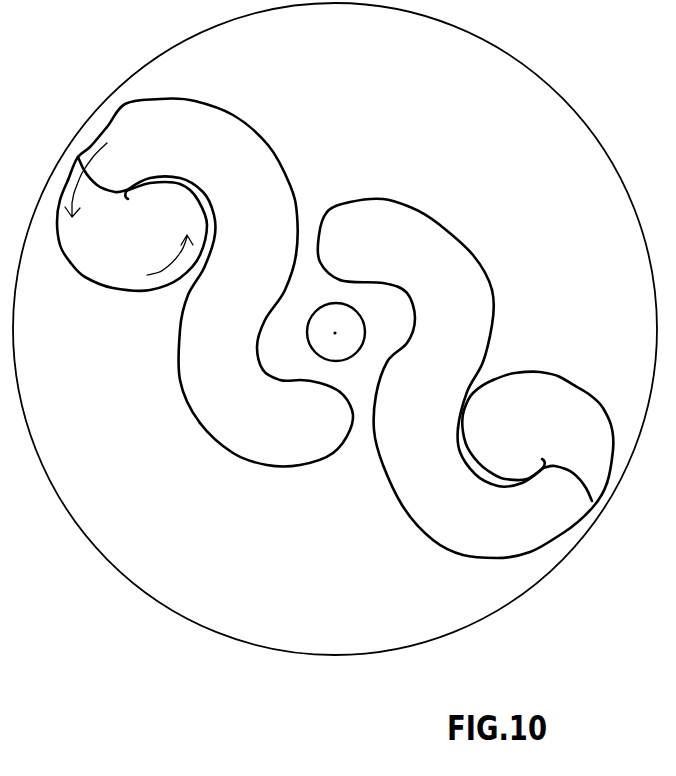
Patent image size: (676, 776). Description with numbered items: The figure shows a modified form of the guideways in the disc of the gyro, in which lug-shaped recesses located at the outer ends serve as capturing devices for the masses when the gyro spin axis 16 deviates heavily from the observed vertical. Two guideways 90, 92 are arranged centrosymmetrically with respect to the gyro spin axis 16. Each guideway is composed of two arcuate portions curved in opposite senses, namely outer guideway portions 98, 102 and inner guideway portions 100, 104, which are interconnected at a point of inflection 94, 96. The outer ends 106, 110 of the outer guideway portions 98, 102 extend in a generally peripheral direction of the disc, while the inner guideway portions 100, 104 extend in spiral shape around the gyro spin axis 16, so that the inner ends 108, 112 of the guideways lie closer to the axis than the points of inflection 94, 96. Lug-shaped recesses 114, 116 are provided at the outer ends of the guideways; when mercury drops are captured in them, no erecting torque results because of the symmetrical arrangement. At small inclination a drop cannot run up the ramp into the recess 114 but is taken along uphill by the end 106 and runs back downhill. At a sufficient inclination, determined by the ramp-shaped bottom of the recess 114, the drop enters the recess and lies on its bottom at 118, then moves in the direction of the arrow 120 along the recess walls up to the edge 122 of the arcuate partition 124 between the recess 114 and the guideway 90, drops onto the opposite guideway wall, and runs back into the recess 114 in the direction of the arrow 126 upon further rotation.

The gyro spin axis 16 is at (336, 333).
The guideway 90 is at (203, 282).
The guideway 92 is at (450, 378).
The point of inflection 94 is at (227, 350).
The point of inflection 96 is at (438, 308).
The outer guideway portion 98 is at (188, 176).
The inner guideway portion 100 is at (289, 416).
The outer guideway portion 102 is at (490, 476).
The inner guideway portion 104 is at (389, 251).
The outer end 106 is at (117, 221).
The inner end 108 is at (352, 410).
The outer end 110 is at (537, 418).
The inner end 112 is at (322, 268).
The lug-shaped recess 114 is at (77, 273).
The lug-shaped recess 116 is at (527, 373).
The bottom of recess 118 is at (127, 291).
The arrow 120 is at (168, 268).
The edge 122 is at (128, 201).
The arcuate partition 124 is at (158, 104).
The arrow 126 is at (82, 173).